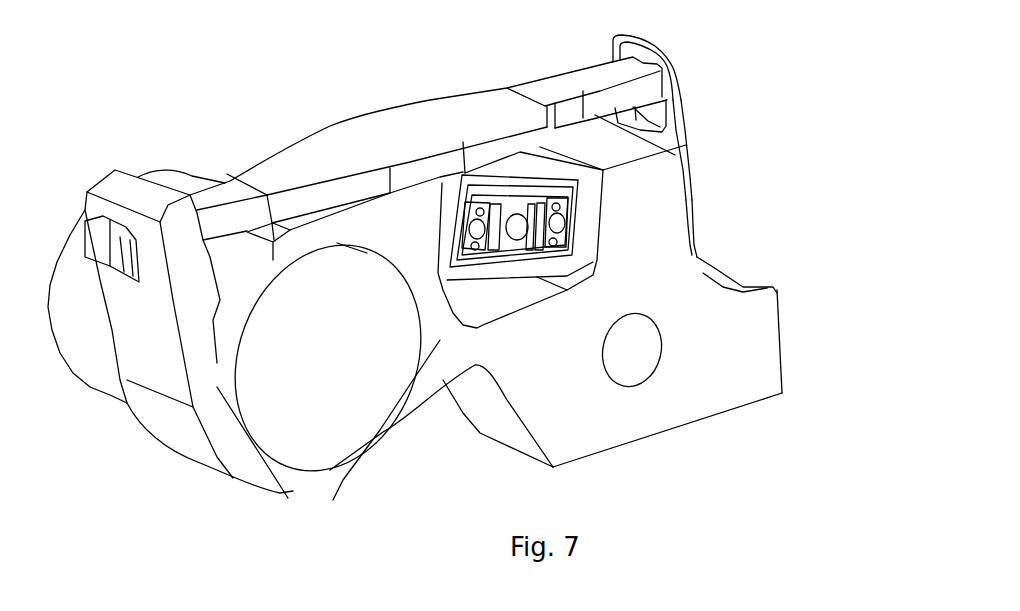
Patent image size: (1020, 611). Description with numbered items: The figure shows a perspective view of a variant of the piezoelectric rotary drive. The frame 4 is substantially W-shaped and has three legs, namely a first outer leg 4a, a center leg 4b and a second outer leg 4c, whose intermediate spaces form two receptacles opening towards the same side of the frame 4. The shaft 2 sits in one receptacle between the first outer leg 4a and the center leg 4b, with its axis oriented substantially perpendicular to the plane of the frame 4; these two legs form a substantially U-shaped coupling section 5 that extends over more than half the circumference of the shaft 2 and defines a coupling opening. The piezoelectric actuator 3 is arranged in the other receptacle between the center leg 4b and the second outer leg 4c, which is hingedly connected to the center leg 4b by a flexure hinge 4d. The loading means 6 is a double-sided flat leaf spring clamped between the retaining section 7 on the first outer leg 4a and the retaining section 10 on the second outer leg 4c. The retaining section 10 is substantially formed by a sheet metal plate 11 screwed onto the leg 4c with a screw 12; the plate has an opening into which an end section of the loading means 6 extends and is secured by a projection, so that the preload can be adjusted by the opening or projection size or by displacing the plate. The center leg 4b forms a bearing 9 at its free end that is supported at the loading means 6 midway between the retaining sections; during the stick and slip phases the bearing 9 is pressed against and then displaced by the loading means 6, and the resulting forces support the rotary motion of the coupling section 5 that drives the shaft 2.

The shaft 2 is at (343, 369).
The piezoelectric actuator 3 is at (515, 195).
The frame 4 is at (813, 265).
The first outer leg 4a is at (258, 464).
The center leg 4b is at (379, 441).
The second outer leg 4c is at (635, 257).
The flexure hinge 4d is at (475, 345).
The coupling section 5 is at (272, 547).
The loading means 6 is at (337, 143).
The retaining section 7 is at (107, 173).
The bearing 9 is at (410, 220).
The retaining section 10 is at (695, 56).
The sheet metal plate 11 is at (685, 120).
The screw 12 is at (692, 167).